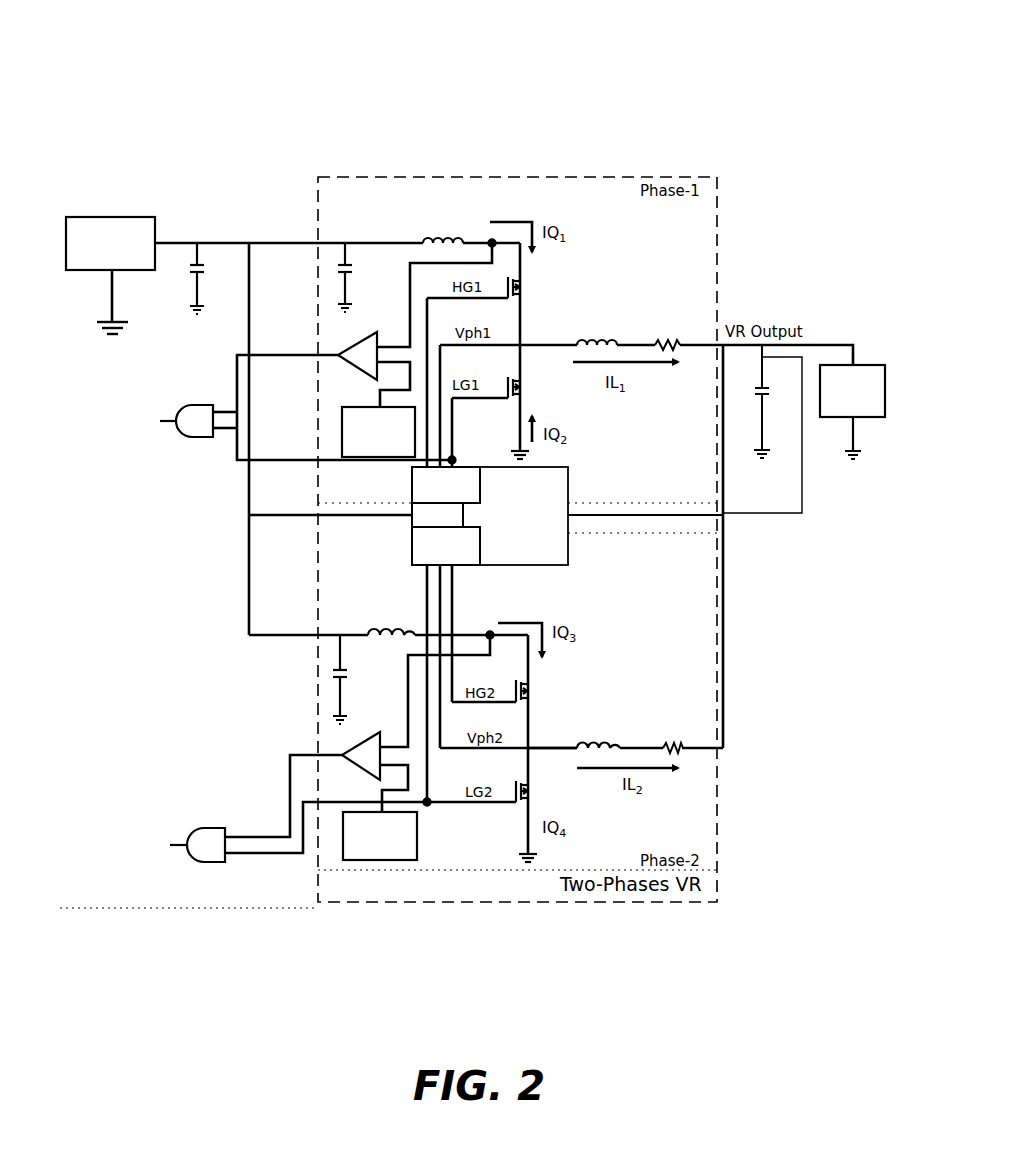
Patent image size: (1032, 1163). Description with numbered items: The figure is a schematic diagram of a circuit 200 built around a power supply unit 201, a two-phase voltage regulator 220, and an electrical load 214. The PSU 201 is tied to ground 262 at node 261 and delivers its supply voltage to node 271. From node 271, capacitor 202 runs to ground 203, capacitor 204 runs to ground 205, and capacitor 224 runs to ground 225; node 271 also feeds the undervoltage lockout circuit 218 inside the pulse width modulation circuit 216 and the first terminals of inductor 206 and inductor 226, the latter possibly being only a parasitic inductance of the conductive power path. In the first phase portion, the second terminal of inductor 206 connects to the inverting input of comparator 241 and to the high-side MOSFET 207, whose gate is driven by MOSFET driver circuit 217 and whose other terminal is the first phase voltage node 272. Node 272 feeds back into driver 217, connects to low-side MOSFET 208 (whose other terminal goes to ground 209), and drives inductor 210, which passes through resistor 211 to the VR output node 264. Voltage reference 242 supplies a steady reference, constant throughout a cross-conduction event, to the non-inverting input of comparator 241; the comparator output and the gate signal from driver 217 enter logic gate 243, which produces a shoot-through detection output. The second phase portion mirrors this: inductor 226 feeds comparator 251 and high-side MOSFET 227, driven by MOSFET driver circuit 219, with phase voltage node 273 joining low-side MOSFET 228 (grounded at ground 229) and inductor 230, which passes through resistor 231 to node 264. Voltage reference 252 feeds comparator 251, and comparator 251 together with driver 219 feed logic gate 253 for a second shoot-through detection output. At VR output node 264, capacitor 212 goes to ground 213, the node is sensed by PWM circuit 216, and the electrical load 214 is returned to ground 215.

The circuit 200 is at (804, 76).
The power supply unit 201 is at (120, 217).
The capacitor 202 is at (192, 264).
The ground 203 is at (192, 310).
The capacitor 204 is at (340, 263).
The ground 205 is at (340, 310).
The inductor 206 is at (421, 241).
The MOSFET 207 is at (524, 294).
The MOSFET 208 is at (527, 398).
The ground 209 is at (527, 452).
The inductor 210 is at (616, 343).
The resistor 211 is at (675, 344).
The capacitor 212 is at (750, 395).
The ground 213 is at (756, 452).
The electrical load 214 is at (820, 388).
The ground 215 is at (855, 458).
The pulse width modulation circuit 216 is at (568, 487).
The MOSFET driver circuit 217 is at (412, 478).
The undervoltage lockout circuit 218 is at (412, 518).
The MOSFET driver circuit 219 is at (412, 550).
The voltage regulator 220 is at (512, 905).
The capacitor 224 is at (335, 670).
The ground 225 is at (335, 718).
The inductor 226 is at (372, 632).
The MOSFET 227 is at (533, 688).
The MOSFET 228 is at (533, 800).
The ground 229 is at (536, 857).
The inductor 230 is at (612, 745).
The resistor 231 is at (683, 745).
The comparator 241 is at (362, 368).
The voltage reference 242 is at (342, 432).
The logic gate 243 is at (200, 403).
The comparator 251 is at (368, 768).
The voltage reference 252 is at (417, 838).
The logic gate 253 is at (210, 828).
The node 261 is at (110, 287).
The ground 262 is at (107, 335).
The VR output node 264 is at (815, 344).
The node 271 is at (222, 242).
The first phase voltage node 272 is at (530, 347).
The first phase voltage node 273 is at (545, 746).